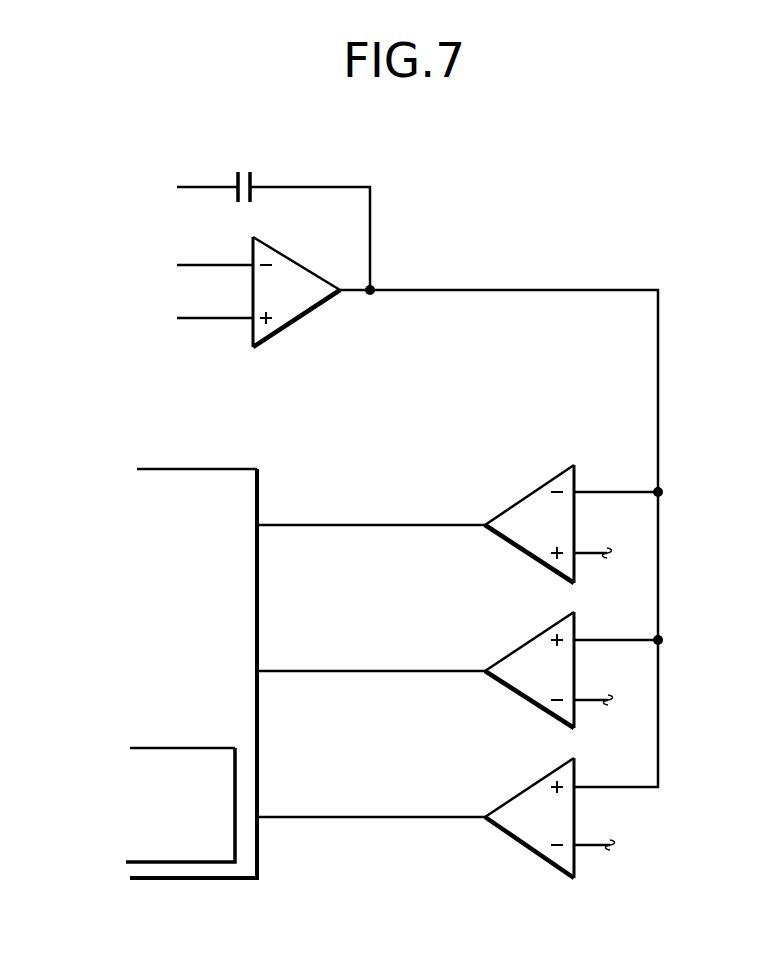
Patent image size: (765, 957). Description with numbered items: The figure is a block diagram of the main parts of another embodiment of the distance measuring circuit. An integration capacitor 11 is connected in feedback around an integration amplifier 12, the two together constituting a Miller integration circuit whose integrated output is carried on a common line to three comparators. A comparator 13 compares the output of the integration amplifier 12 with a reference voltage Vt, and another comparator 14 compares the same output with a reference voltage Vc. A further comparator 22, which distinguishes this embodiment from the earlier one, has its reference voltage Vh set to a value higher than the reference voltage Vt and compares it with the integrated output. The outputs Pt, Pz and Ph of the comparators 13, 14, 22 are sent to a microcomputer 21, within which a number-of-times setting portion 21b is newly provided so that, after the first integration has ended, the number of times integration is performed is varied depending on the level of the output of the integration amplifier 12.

The integration capacitor 11 is at (244, 170).
The integration amplifier 12 is at (290, 262).
The comparator 13 is at (520, 644).
The comparator 14 is at (522, 496).
The comparator 22 is at (522, 791).
The microcomputer 21 is at (205, 881).
The number-of-times setting portion 21b is at (193, 748).